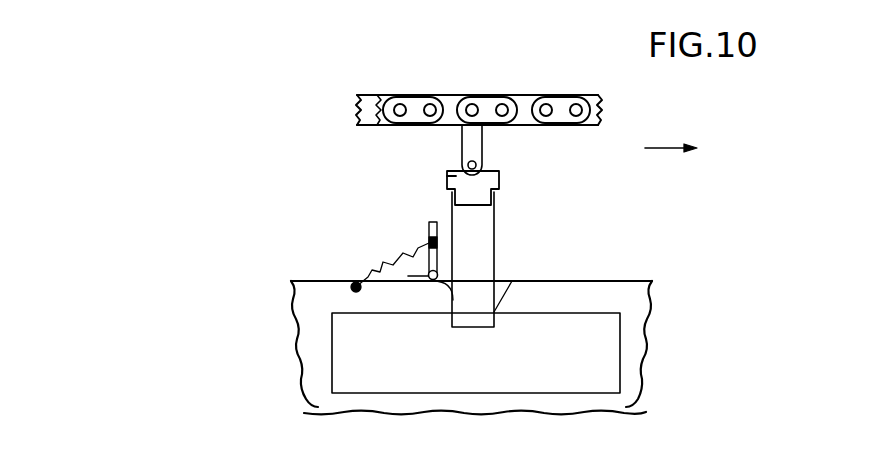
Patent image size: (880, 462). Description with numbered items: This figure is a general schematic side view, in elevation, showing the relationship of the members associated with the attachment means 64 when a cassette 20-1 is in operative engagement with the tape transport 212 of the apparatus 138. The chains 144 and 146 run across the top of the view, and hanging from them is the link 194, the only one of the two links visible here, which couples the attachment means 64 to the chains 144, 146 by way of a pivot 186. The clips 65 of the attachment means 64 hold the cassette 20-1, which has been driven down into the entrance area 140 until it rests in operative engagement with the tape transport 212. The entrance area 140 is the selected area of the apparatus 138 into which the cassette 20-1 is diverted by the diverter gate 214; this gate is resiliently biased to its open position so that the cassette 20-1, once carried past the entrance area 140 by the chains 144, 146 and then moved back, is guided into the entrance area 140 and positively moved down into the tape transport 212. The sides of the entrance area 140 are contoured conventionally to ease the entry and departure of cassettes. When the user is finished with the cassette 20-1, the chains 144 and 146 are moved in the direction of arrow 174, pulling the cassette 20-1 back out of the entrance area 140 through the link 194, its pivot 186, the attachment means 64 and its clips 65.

The chain 146 is at (366, 96).
The chain 144 is at (512, 96).
The link 194 is at (484, 133).
The pivot pin 186 is at (479, 161).
The attachment means 64 is at (507, 182).
The clips 65 is at (467, 183).
The entrance area 140 is at (499, 278).
The cassette 20-1 is at (453, 210).
The deck 138 is at (604, 288).
The tape transport 212 is at (610, 358).
The diverter gate 214 is at (386, 262).
The arrow 174 is at (654, 148).